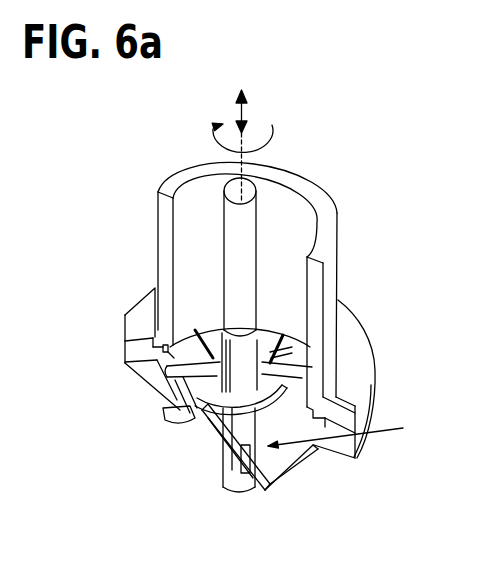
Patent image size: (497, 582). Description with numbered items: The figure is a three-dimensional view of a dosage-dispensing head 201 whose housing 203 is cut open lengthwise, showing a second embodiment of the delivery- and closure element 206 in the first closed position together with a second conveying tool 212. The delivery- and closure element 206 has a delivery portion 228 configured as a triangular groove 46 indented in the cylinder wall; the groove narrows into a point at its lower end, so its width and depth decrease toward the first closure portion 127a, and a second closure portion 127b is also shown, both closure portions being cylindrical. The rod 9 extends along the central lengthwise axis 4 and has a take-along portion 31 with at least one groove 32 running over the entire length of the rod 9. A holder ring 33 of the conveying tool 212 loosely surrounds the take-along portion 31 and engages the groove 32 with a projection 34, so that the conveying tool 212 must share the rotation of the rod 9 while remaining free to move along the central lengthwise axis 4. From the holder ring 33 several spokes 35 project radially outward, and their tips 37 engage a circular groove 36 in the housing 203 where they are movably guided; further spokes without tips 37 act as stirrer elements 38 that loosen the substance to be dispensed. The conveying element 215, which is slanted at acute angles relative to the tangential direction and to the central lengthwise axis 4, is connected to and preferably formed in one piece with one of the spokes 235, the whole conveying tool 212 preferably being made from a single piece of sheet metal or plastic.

The central lengthwise axis 4 is at (242, 168).
The dosage-dispensing head 201 is at (356, 196).
The rod 9 is at (235, 257).
The stirrer elements 38 is at (164, 348).
The circular groove 36 is at (167, 365).
The spoke 235 is at (120, 374).
The housing 203 is at (112, 378).
The tips 37 is at (183, 402).
The second conveying tool 212 is at (168, 432).
The conveying element 215 is at (212, 465).
The first closure portion 127a is at (236, 489).
The triangular groove 46 is at (258, 450).
The delivery portion 228 is at (313, 448).
The delivery- and closure element 206 is at (374, 427).
The second closure portion 127b is at (323, 414).
The projection 34 is at (233, 389).
The holder ring 33 is at (268, 368).
The spokes 35 is at (290, 358).
The take-along portion 31 is at (250, 367).
The groove 32 is at (233, 358).